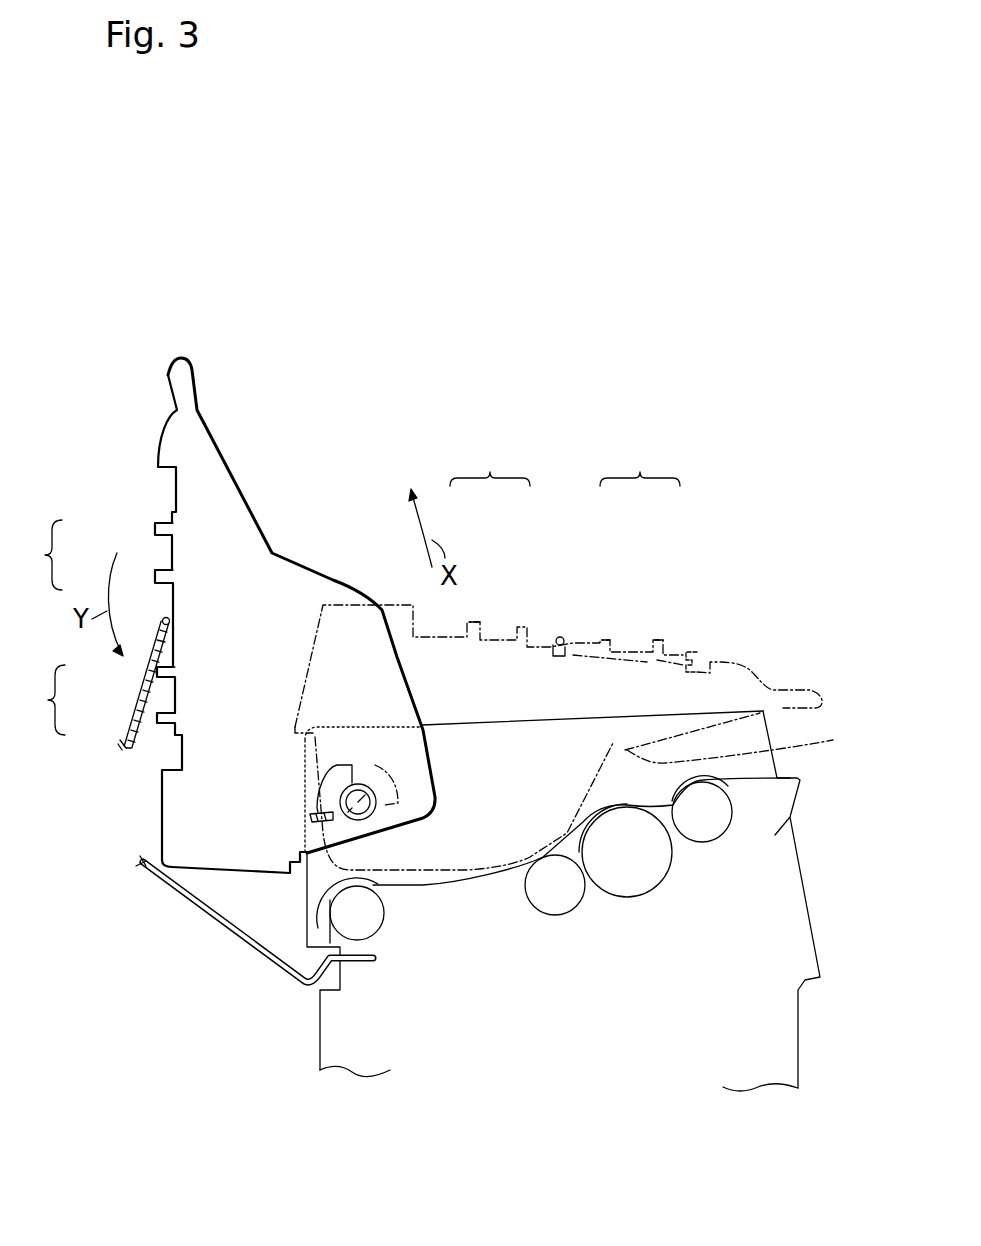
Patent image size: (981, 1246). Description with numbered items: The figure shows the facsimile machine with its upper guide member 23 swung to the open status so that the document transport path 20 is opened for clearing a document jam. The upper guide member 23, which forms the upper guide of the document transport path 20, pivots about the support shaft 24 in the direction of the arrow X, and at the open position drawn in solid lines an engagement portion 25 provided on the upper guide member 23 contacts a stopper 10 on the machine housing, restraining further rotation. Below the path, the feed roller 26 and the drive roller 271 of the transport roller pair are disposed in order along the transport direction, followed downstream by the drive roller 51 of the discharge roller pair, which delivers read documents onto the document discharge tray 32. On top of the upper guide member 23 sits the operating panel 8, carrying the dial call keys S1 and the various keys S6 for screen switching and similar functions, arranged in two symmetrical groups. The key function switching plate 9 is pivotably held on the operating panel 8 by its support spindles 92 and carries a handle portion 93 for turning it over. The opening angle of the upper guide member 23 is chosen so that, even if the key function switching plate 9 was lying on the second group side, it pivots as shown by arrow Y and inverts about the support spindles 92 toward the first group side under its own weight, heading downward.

The operating panel 8 is at (153, 466).
The key function switching plate 9 is at (120, 735).
The stopper 10 is at (307, 820).
The document transport path 20 is at (475, 873).
The upper guide member 23 is at (252, 767).
The support shaft 24 is at (366, 794).
The engagement portion 25 is at (337, 773).
The feed roller 26 is at (648, 882).
The document discharge tray 32 is at (197, 907).
The drive roller 51 is at (370, 917).
The support spindle 92 is at (558, 637).
The handle portion 93 is at (690, 650).
The drive roller 271 is at (562, 902).
The dial call key S1 is at (155, 530).
The various key S6 is at (157, 718).